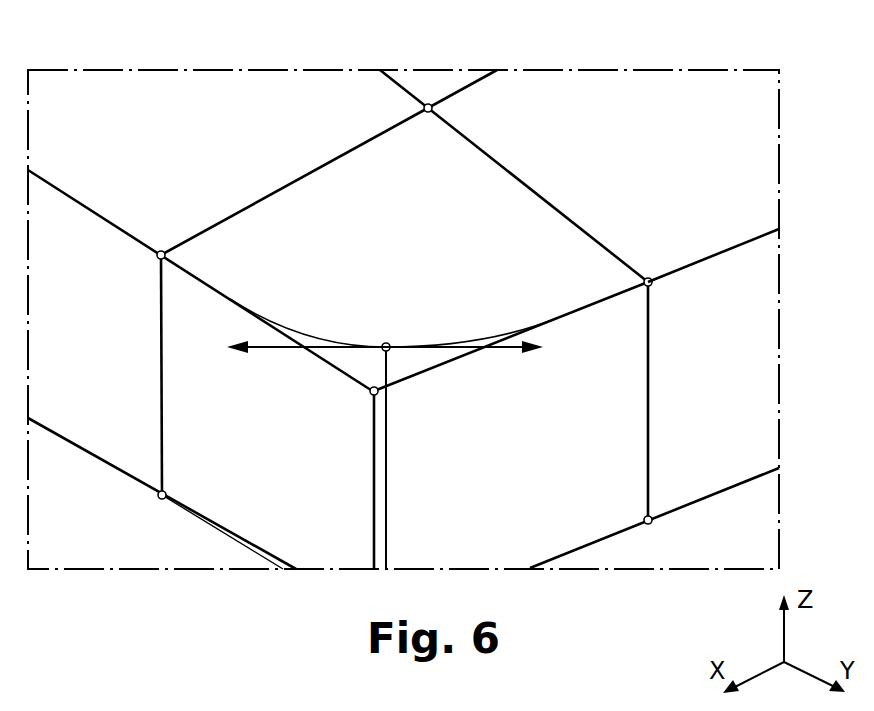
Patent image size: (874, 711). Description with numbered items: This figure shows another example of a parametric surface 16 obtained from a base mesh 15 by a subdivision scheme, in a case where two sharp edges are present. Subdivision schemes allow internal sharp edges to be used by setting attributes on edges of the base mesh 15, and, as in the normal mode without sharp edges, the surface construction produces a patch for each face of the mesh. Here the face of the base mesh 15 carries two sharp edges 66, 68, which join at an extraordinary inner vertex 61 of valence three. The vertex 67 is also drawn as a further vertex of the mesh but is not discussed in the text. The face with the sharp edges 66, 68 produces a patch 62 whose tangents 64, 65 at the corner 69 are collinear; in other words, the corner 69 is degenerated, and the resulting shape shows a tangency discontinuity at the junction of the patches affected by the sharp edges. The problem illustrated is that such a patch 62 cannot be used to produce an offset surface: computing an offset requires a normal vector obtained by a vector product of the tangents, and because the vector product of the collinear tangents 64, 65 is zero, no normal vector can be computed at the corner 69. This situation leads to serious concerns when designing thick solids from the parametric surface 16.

The base mesh 15 is at (192, 236).
The parametric surface 16 is at (287, 118).
The extraordinary inner vertex 61 is at (368, 397).
The patch 62 is at (404, 176).
The collinear tangent 64 is at (284, 352).
The collinear tangent 65 is at (512, 352).
The sharp edge 66 is at (198, 281).
The upper vertex point 67 is at (434, 108).
The sharp edge 68 is at (606, 300).
The corner 69 is at (386, 341).